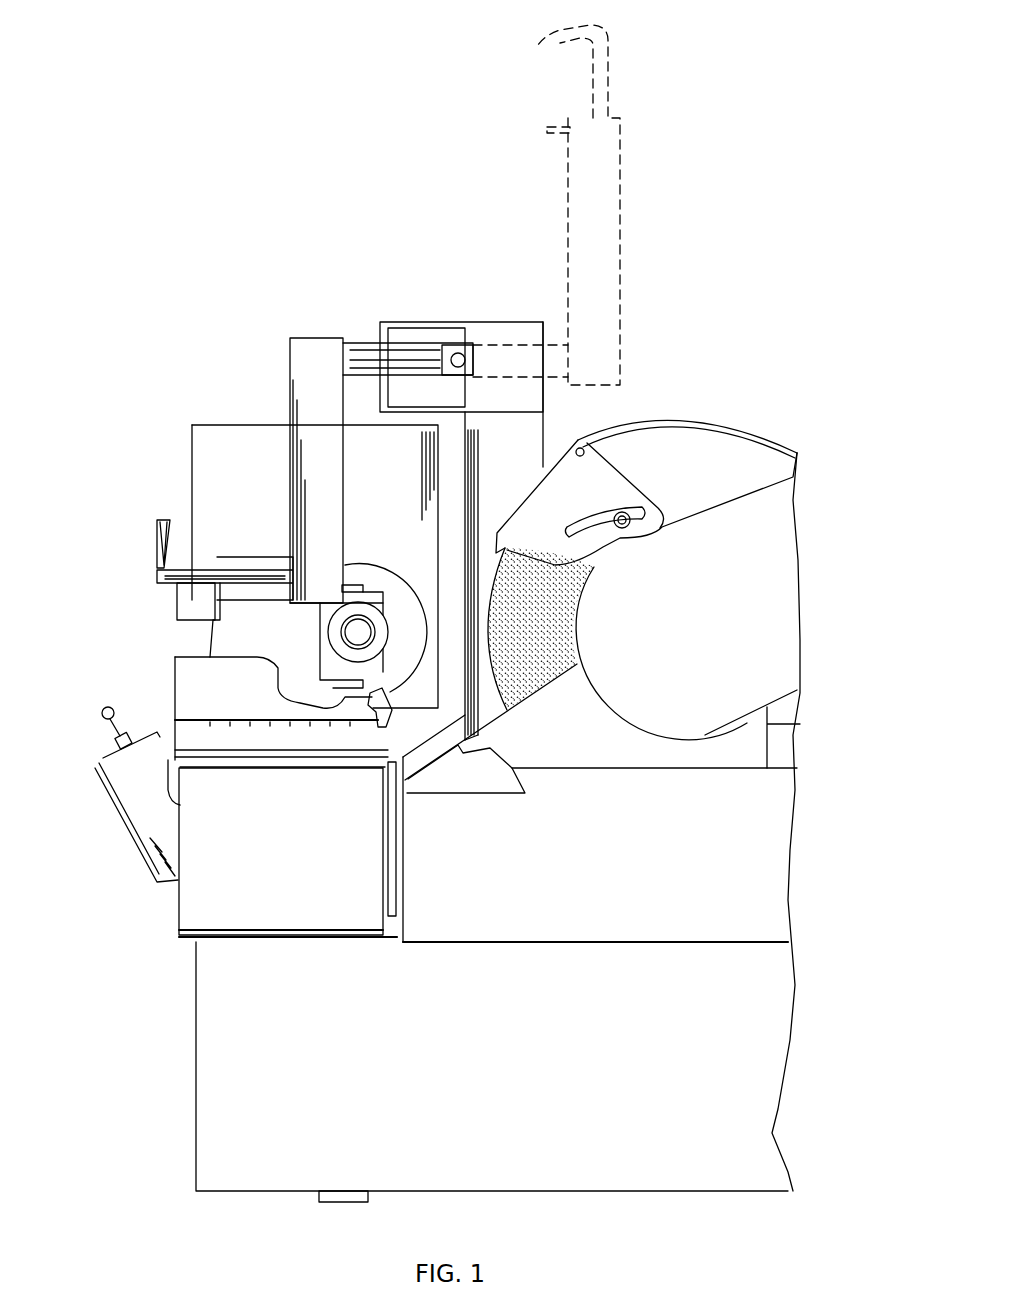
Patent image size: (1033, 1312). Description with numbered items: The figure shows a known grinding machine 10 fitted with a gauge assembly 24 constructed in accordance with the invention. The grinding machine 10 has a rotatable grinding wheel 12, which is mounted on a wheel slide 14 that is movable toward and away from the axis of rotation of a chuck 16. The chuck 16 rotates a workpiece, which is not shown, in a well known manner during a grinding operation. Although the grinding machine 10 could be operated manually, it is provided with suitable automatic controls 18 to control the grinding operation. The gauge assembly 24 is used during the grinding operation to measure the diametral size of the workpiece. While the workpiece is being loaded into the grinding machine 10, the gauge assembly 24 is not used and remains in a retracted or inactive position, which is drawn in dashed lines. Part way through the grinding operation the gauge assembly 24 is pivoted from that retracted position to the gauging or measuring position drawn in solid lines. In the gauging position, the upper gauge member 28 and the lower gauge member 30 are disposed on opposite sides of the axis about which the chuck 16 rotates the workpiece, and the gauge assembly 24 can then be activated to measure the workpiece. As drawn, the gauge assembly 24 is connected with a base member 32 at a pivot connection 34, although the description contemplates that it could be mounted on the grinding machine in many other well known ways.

The grinding machine 10 is at (735, 77).
The grinding wheel 12 is at (545, 660).
The wheel slide 14 is at (750, 728).
The chuck 16 is at (372, 618).
The automatic controls 18 is at (132, 793).
The gauge assembly 24 is at (282, 385).
The upper gauge member 28 is at (346, 592).
The lower gauge member 30 is at (370, 700).
The base member 32 is at (523, 433).
The pivot connection 34 is at (464, 352).